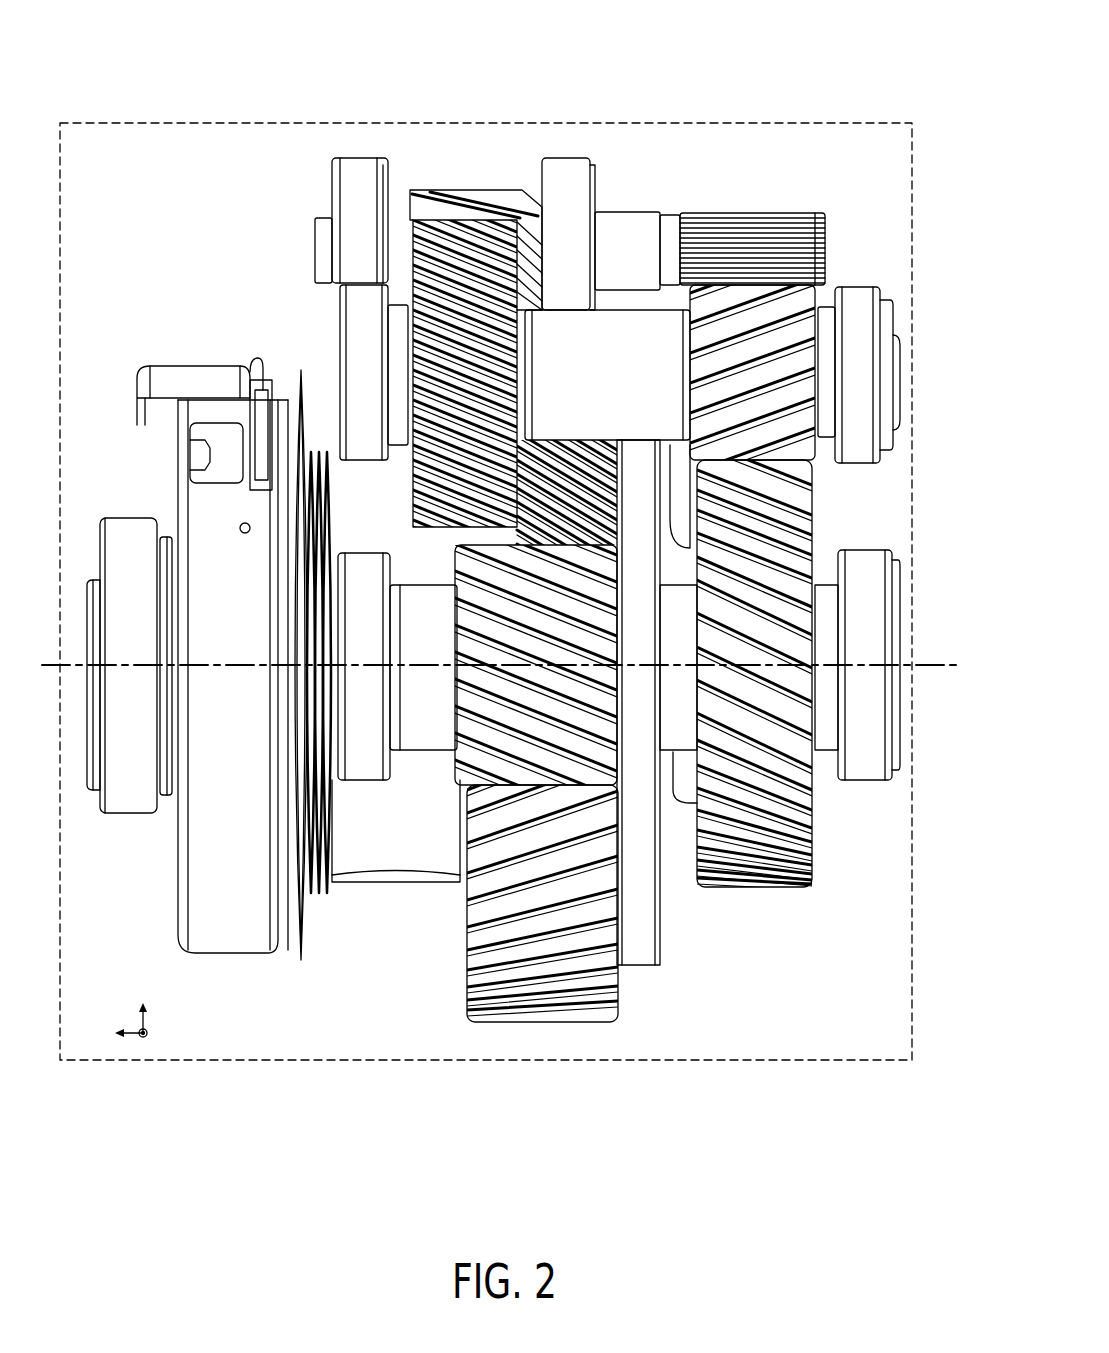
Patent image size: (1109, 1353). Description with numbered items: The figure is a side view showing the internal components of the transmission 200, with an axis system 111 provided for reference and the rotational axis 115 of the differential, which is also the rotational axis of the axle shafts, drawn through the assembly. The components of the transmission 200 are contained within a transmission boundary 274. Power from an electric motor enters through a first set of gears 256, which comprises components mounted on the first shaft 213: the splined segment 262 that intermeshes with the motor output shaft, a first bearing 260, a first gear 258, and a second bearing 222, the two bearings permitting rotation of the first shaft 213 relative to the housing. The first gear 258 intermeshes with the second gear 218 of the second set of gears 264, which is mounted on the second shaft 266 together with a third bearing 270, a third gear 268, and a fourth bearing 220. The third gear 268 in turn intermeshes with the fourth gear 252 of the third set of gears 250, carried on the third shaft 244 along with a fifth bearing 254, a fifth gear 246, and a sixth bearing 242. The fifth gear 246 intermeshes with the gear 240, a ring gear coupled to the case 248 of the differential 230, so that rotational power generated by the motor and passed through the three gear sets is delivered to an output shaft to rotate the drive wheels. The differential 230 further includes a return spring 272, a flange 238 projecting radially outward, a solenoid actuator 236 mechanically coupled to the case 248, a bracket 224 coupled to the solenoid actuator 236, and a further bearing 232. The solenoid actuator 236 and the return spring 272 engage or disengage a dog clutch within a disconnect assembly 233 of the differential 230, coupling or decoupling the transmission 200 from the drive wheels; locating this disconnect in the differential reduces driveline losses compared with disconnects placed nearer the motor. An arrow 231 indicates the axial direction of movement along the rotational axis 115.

The transmission 200 is at (806, 84).
The axis system 111 is at (149, 991).
The rotational axis 115 is at (912, 665).
The first shaft 213 is at (318, 222).
The second gear 218 is at (400, 330).
The fourth bearing 220 is at (336, 355).
The second bearing 222 is at (360, 175).
The bracket 224 is at (205, 368).
The differential 230 is at (665, 992).
The axial direction 231 is at (276, 707).
The sixth bearing 232 is at (118, 813).
The disconnect assembly 233 is at (283, 1025).
The solenoid actuator 236 is at (232, 940).
The flange 238 is at (301, 962).
The gear 240 is at (546, 1025).
The sixth bearing 242 is at (352, 782).
The third shaft 244 is at (430, 742).
The fifth gear 246 is at (627, 775).
The case 248 is at (408, 884).
The third set of gears 250 is at (835, 810).
The fourth gear 252 is at (772, 886).
The fifth bearing 254 is at (878, 782).
The first set of gears 256 is at (607, 188).
The first gear 258 is at (472, 185).
The first bearing 260 is at (567, 176).
The splined segment 262 is at (746, 213).
The second set of gears 264 is at (856, 274).
The second shaft 266 is at (640, 320).
The third gear 268 is at (826, 305).
The third bearing 270 is at (886, 305).
The return spring 272 is at (322, 890).
The transmission boundary 274 is at (188, 1062).